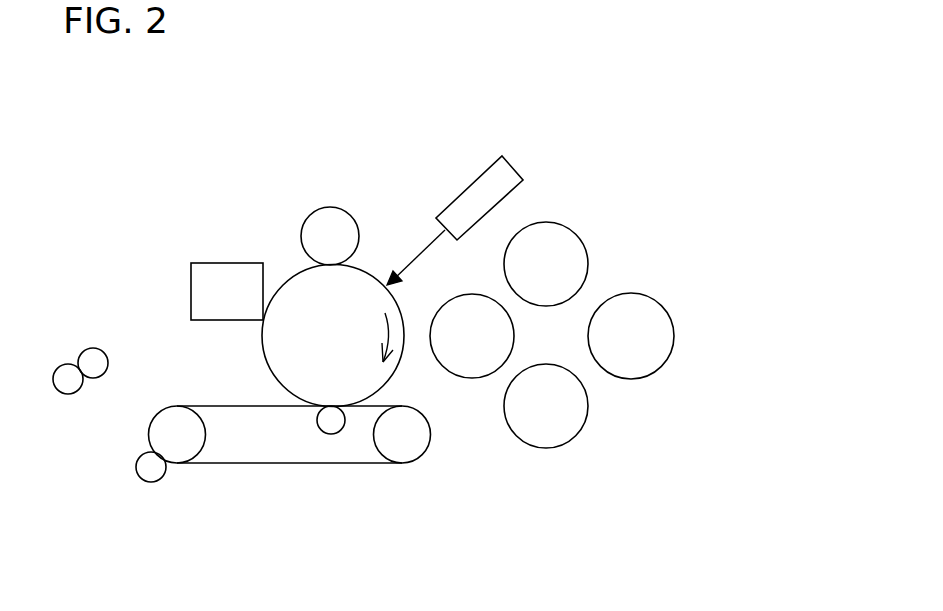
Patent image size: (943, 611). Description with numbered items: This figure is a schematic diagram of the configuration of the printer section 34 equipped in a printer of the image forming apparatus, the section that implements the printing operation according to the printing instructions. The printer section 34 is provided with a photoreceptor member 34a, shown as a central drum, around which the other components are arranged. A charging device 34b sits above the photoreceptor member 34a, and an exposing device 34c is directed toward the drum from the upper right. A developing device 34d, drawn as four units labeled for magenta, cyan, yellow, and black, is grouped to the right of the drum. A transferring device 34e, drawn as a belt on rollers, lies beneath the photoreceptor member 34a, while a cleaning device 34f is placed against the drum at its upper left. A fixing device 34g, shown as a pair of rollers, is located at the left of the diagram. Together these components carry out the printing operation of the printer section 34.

The printer section 34 is at (457, 89).
The photoreceptor member 34a is at (380, 370).
The charging device 34b is at (327, 206).
The exposing device 34c is at (502, 156).
The developing device 34d is at (692, 450).
The transferring device 34e is at (432, 494).
The cleaning device 34f is at (210, 262).
The fixing device 34g is at (59, 363).